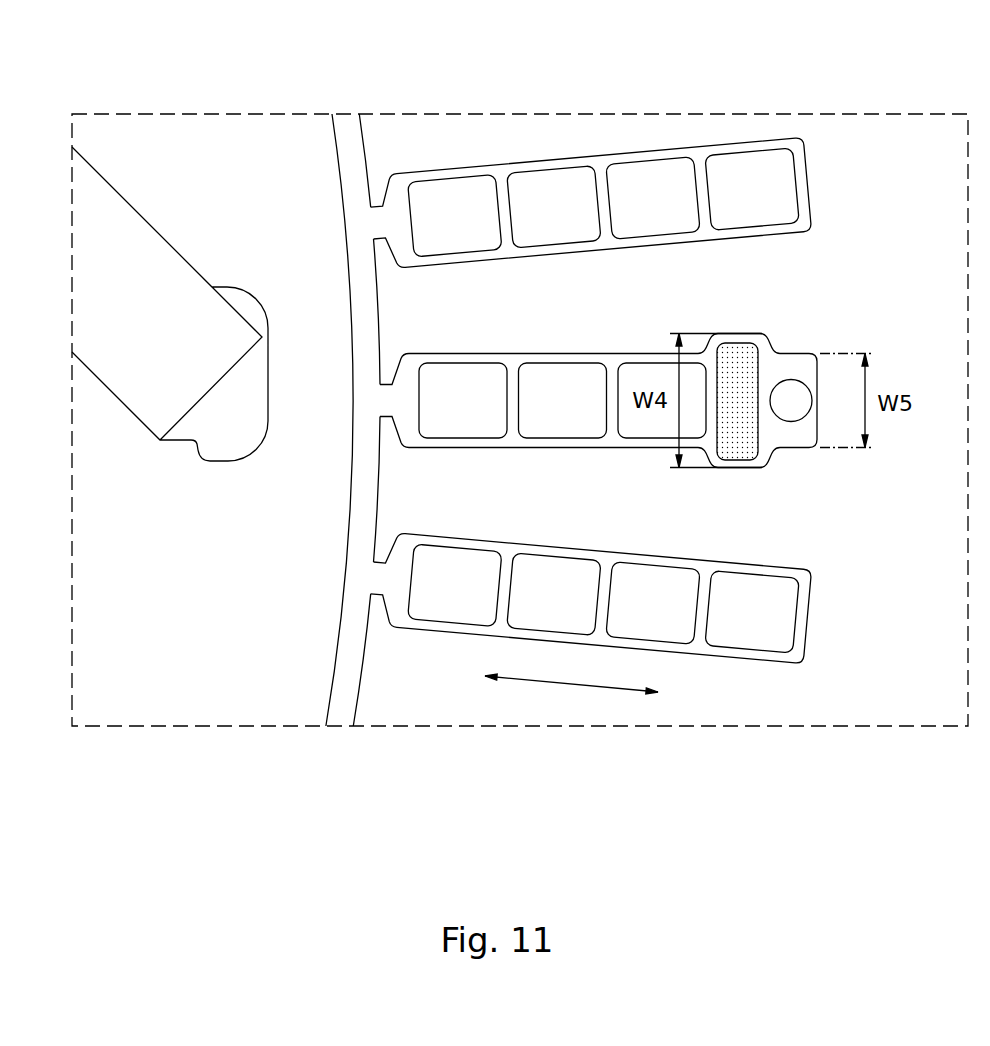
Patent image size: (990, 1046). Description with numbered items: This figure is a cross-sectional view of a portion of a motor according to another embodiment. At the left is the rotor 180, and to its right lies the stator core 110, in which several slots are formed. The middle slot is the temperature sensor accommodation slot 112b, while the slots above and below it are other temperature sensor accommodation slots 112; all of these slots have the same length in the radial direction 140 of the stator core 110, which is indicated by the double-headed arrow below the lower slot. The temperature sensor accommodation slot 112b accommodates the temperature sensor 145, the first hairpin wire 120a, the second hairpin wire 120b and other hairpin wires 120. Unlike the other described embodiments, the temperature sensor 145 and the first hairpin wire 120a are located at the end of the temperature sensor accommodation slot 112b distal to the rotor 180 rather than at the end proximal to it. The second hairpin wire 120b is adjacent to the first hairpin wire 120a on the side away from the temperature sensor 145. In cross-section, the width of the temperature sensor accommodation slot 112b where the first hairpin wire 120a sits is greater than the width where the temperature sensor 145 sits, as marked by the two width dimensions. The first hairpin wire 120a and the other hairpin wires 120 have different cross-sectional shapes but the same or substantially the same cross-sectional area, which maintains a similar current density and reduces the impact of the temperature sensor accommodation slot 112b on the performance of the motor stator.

The stator core 110 is at (743, 710).
The slots 112 is at (760, 140).
The temperature sensor accommodation slot 112b is at (817, 353).
The hairpin wires 120 is at (488, 373).
The first hairpin wire 120a is at (742, 450).
The second hairpin wire 120b is at (643, 430).
The radial direction 140 is at (573, 685).
The temperature sensor 145 is at (795, 413).
The rotor 180 is at (253, 708).